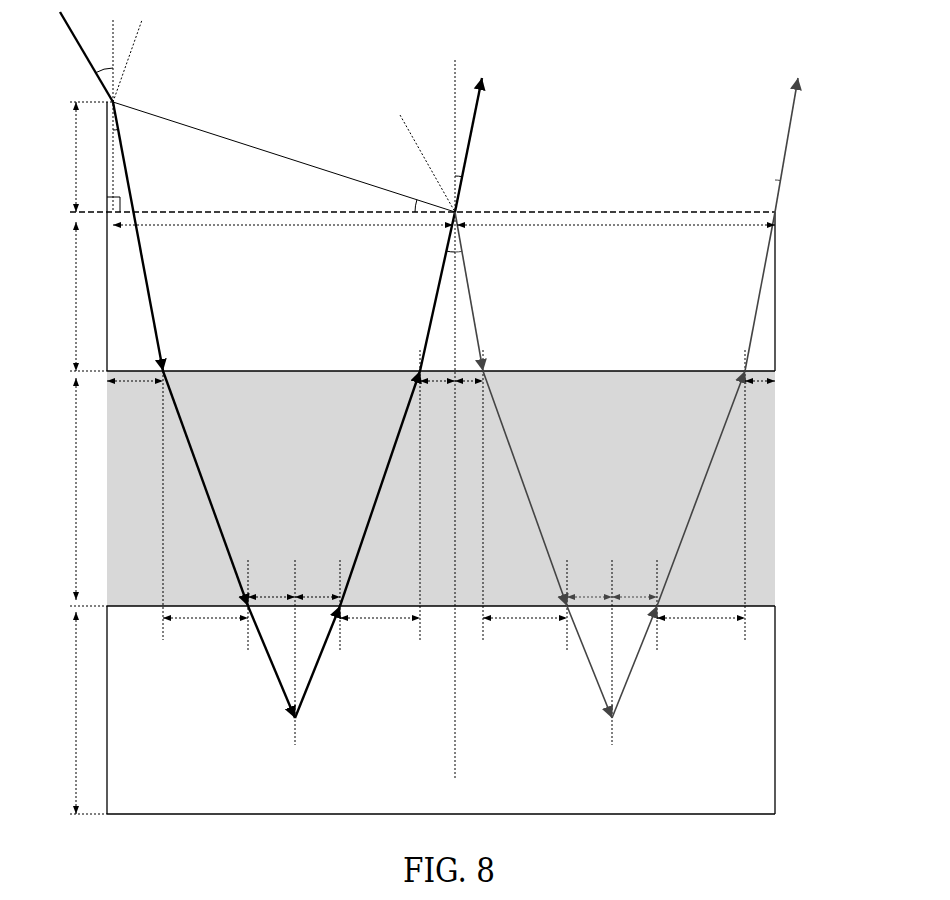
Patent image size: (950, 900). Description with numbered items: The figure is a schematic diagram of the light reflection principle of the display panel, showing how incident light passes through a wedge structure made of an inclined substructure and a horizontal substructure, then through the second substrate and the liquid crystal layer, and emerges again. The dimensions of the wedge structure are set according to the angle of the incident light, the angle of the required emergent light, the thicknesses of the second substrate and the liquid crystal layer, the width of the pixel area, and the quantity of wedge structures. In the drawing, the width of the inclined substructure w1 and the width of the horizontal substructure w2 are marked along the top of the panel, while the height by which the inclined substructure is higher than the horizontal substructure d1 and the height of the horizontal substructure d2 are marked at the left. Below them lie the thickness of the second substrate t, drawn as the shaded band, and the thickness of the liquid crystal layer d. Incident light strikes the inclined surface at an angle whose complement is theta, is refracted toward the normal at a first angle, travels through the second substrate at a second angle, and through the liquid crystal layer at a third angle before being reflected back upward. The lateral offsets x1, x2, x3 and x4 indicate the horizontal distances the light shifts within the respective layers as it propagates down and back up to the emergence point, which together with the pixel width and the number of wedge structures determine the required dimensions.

The height by which the inclined substructure is higher than the horizontal substruc d1 is at (62, 157).
The height of the horizontal substructure d2 is at (61, 296).
The thickness of the second substrate t is at (65, 489).
The thickness of the liquid crystal layer d is at (64, 713).
The width of the inclined substructure w1 is at (283, 241).
The width of the horizontal substructure w2 is at (616, 241).
The lateral offset in upper layer x1 is at (135, 396).
The lateral offset in lower layer x2 is at (454, 633).
The lateral offset in guiding layer x3 is at (452, 585).
The lateral offset near emergence x4 is at (597, 396).